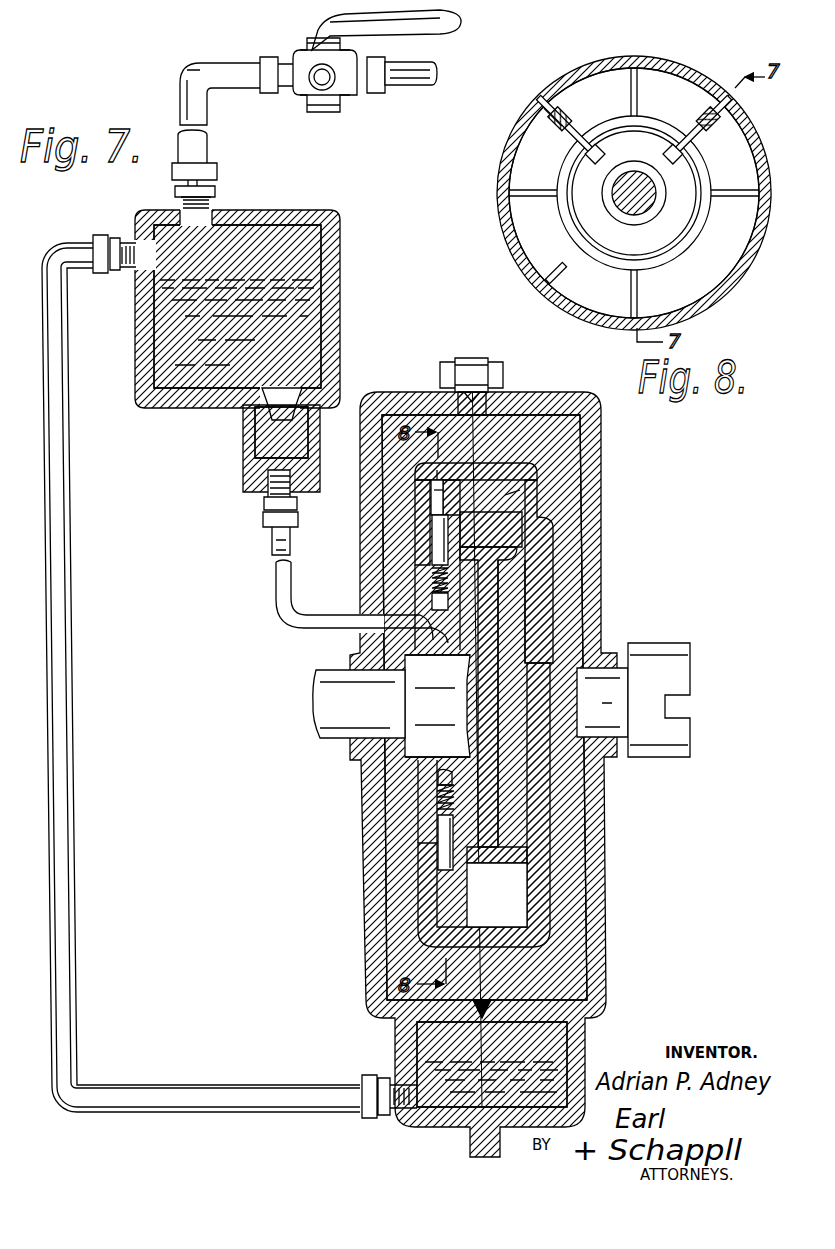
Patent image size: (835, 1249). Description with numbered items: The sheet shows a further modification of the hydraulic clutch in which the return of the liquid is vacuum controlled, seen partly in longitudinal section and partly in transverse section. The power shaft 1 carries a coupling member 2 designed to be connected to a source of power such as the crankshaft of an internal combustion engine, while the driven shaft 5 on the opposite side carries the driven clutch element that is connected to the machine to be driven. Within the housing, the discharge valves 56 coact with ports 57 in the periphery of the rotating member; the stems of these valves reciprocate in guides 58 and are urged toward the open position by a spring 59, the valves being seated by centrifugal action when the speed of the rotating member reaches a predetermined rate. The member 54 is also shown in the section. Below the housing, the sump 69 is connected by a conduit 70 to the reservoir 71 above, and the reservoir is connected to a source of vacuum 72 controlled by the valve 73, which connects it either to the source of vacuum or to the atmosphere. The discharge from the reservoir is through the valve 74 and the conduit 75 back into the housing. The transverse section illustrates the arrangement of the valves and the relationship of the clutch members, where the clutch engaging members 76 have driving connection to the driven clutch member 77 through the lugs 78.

In FIG. 7, the power shaft 1 is at (583, 675).
In FIG. 7, the coupling member 2 is at (655, 653).
In FIG. 7, the driven shaft 5 is at (340, 733).
In FIG. 7, the disc 54 is at (498, 578).
In FIG. 8, the disc 54 is at (565, 160).
In FIG. 7, the discharge valve 56 is at (432, 490).
In FIG. 8, the discharge valve 56 is at (722, 270).
In FIG. 7, the port 57 is at (440, 470).
In FIG. 8, the port 57 is at (738, 283).
In FIG. 7, the guide 58 is at (435, 537).
In FIG. 7, the spring 59 is at (432, 583).
In FIG. 8, the spring 59 is at (700, 230).
In FIG. 7, the sump 69 is at (425, 1033).
In FIG. 7, the conduit 70 is at (68, 757).
In FIG. 7, the reservoir 71 is at (290, 232).
In FIG. 7, the source of vacuum 72 is at (432, 72).
In FIG. 7, the valve 73 is at (318, 97).
In FIG. 7, the valve 74 is at (258, 402).
In FIG. 7, the conduit 75 is at (278, 585).
In FIG. 7, the clutch engaging member 76 is at (476, 520).
In FIG. 8, the clutch engaging member 76 is at (648, 75).
In FIG. 7, the driven clutch member 77 is at (502, 463).
In FIG. 8, the driven clutch member 77 is at (585, 60).
In FIG. 7, the lug 78 is at (505, 495).
In FIG. 8, the lug 78 is at (560, 95).